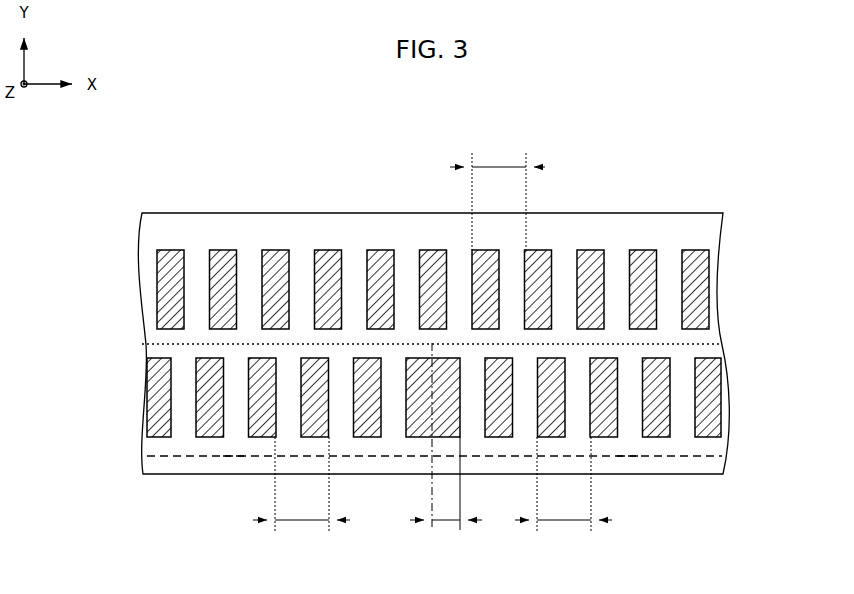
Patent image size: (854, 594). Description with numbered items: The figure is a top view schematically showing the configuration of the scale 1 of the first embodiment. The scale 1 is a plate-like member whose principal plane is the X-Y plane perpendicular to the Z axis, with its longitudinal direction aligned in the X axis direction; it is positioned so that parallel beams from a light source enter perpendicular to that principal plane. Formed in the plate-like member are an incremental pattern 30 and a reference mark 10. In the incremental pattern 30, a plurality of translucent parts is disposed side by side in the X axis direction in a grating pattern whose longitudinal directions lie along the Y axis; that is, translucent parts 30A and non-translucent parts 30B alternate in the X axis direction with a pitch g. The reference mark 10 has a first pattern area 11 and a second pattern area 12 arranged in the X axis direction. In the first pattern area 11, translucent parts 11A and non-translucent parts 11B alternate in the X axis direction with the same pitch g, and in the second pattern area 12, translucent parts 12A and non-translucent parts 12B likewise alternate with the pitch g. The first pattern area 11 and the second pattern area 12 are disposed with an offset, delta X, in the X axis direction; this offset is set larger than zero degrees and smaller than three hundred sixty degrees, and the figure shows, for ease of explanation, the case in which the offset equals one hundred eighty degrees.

The scale 1 is at (157, 212).
The reference mark 10 is at (489, 467).
The first pattern area 11 is at (608, 465).
The translucent parts 11A is at (623, 432).
The non-translucent parts 11B is at (648, 433).
The second pattern area 12 is at (257, 467).
The translucent parts 12A is at (240, 432).
The non-translucent parts 12B is at (212, 437).
The incremental pattern 30 is at (487, 252).
The translucent parts 30A is at (357, 257).
The non-translucent parts 30B is at (387, 252).